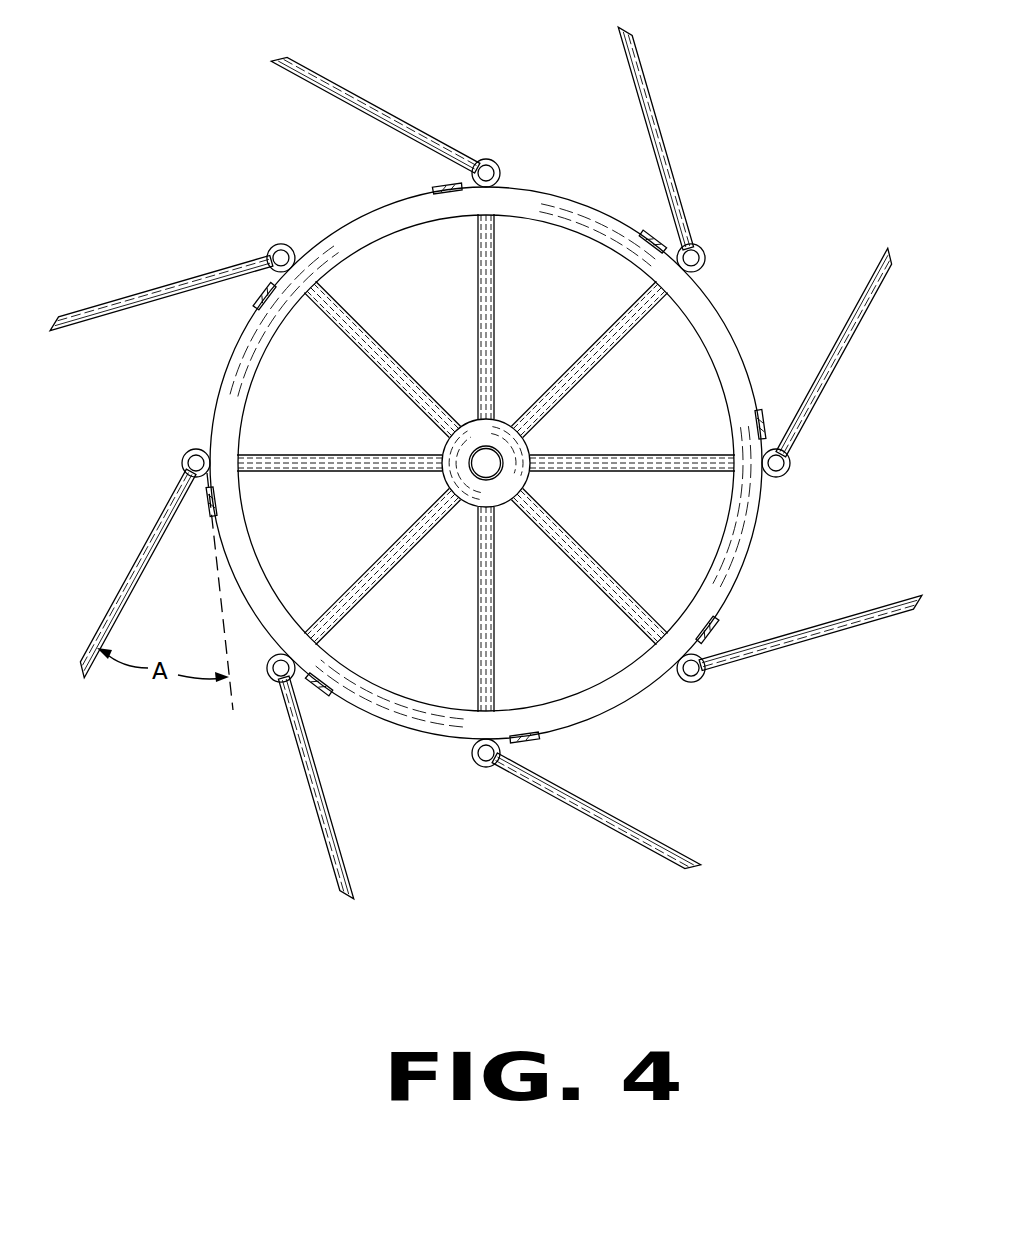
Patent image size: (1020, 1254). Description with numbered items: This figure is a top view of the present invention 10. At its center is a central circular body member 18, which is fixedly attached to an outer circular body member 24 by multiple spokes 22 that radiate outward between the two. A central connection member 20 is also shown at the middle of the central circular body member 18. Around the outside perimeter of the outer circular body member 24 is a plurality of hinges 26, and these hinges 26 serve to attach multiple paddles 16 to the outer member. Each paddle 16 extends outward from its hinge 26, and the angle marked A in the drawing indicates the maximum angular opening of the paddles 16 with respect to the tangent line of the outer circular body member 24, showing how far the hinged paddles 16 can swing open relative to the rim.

The present invention 10 is at (486, 463).
The paddles 16 is at (128, 300).
The central circular body member 18 is at (502, 503).
The central connection member 20 is at (484, 455).
The spokes 22 is at (600, 367).
The outer circular body member 24 is at (348, 226).
The hinges 26 is at (193, 456).